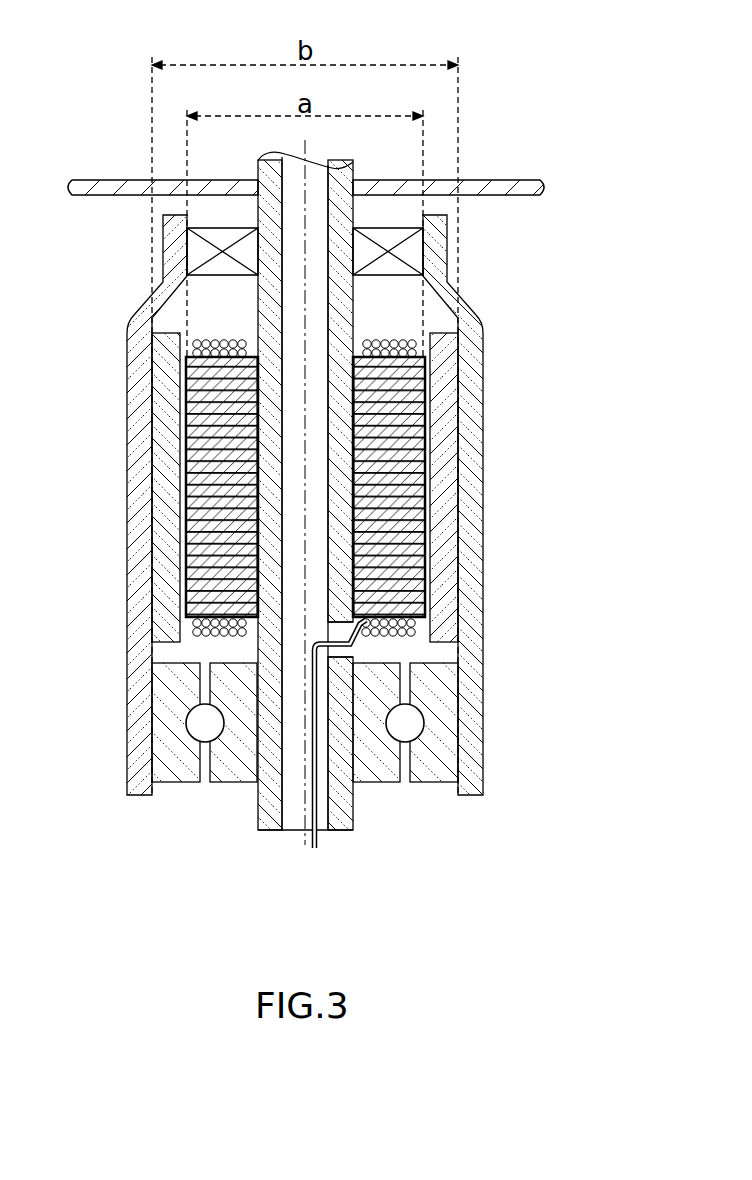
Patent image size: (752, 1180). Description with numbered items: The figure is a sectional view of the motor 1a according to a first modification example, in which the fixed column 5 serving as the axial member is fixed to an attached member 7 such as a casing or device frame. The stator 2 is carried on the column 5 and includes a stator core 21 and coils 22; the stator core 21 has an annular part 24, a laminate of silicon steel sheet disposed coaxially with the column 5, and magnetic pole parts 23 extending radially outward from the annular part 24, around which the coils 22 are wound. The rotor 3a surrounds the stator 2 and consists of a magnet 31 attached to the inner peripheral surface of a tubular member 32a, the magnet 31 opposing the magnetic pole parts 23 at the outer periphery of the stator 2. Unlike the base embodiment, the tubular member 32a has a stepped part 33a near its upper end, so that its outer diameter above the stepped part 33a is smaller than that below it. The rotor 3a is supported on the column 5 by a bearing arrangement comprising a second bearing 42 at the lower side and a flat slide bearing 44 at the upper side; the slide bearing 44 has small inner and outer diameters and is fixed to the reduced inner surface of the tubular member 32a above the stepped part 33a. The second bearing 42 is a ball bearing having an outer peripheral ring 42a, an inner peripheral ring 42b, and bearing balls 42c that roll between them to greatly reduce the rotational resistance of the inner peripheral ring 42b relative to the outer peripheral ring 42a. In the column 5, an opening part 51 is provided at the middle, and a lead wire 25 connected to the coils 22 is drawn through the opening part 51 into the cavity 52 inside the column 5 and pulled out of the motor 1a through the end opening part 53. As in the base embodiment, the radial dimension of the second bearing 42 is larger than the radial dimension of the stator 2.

The motor 1a is at (578, 82).
The attached member 7 is at (505, 180).
The stepped part 33a is at (145, 298).
The tubular member 32a is at (473, 405).
The magnet 31 is at (445, 450).
The rotor 3a is at (582, 385).
The slide bearing 44 is at (408, 250).
The coil 22 is at (352, 638).
The lead wire 25 is at (338, 822).
The column 5 is at (265, 830).
The cavity 52 is at (292, 813).
The opening part 51 is at (343, 655).
The magnetic pole parts 23 is at (413, 492).
The annular part 24 is at (357, 503).
The stator core 21 is at (549, 483).
The stator 2 is at (596, 500).
The end opening part 53 is at (323, 832).
The outer peripheral ring 42a is at (428, 755).
The inner peripheral ring 42b is at (373, 777).
The bearing balls 42c is at (407, 720).
The second bearing 42 is at (586, 692).